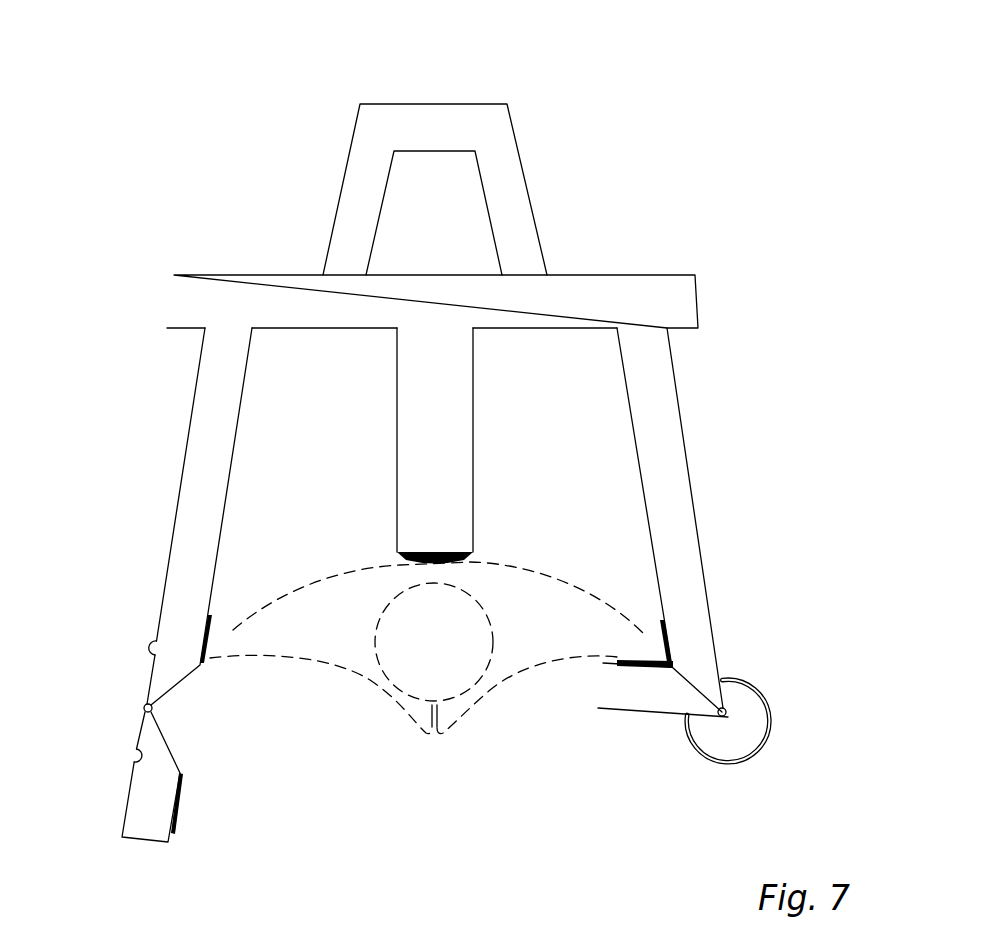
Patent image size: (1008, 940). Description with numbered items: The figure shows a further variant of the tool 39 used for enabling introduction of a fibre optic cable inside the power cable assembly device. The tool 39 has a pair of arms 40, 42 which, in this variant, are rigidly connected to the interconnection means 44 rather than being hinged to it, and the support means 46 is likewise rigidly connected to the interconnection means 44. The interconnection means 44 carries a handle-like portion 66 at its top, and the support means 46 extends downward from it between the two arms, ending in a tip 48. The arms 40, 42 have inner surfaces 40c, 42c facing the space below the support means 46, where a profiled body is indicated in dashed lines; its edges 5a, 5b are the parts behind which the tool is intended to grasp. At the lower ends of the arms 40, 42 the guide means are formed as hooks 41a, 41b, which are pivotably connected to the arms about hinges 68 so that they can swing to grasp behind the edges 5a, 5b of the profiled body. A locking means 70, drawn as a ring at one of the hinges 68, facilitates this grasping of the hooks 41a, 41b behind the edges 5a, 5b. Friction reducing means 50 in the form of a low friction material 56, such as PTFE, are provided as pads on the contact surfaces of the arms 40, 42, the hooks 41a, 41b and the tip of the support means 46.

The tool 39 is at (638, 153).
The arm 40 is at (170, 516).
The inner surface of first leg 40c is at (236, 462).
The first lower jaw member 41a is at (145, 827).
The second lower jaw member 41b is at (627, 692).
The arm 42 is at (698, 518).
The inner surface of second leg 42c is at (632, 462).
The interconnection means 44 is at (608, 295).
The support means 46 is at (470, 491).
The plunger tip pad 48 is at (460, 564).
The friction reducing means 50 is at (228, 606).
The low friction material 56 is at (213, 648).
The handle 66 is at (508, 138).
The hinge 68 is at (153, 708).
The locking means 70 is at (768, 742).
The edge 5a is at (235, 626).
The edge 5b is at (638, 636).